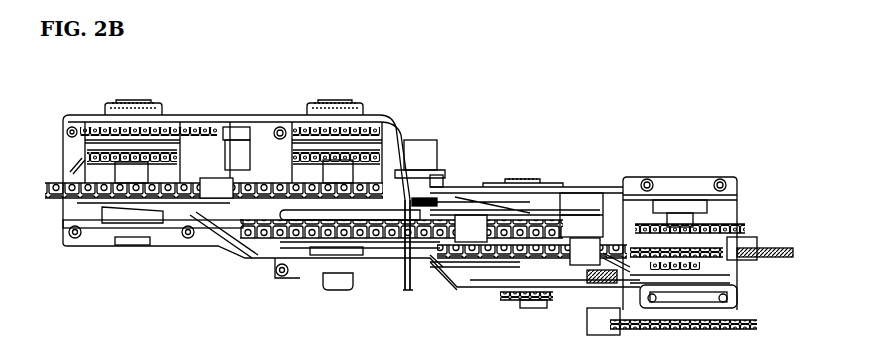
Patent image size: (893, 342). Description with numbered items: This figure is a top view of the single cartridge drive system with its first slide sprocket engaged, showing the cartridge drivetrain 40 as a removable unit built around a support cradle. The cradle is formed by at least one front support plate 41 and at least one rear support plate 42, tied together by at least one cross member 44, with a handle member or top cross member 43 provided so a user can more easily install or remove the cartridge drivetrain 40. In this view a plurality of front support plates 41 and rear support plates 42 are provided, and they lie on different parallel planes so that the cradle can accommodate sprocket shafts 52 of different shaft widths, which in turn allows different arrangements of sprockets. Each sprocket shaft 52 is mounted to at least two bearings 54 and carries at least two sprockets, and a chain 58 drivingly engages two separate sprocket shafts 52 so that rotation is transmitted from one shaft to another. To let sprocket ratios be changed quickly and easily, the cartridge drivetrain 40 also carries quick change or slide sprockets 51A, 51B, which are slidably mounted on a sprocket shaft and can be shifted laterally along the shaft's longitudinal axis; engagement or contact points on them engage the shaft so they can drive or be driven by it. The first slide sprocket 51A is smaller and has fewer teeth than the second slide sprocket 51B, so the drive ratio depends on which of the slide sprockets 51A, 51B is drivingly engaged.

The cartridge drivetrain 40 is at (497, 149).
The front support plate 41 is at (177, 220).
The rear support plate 42 is at (280, 118).
The top cross member 43 is at (410, 255).
The cross member 44 is at (737, 203).
The first slide sprocket 51A is at (720, 278).
The second slide sprocket 51B is at (707, 245).
The sprocket shaft 52 is at (138, 170).
The bearing 54 is at (105, 110).
The chain 58 is at (97, 192).